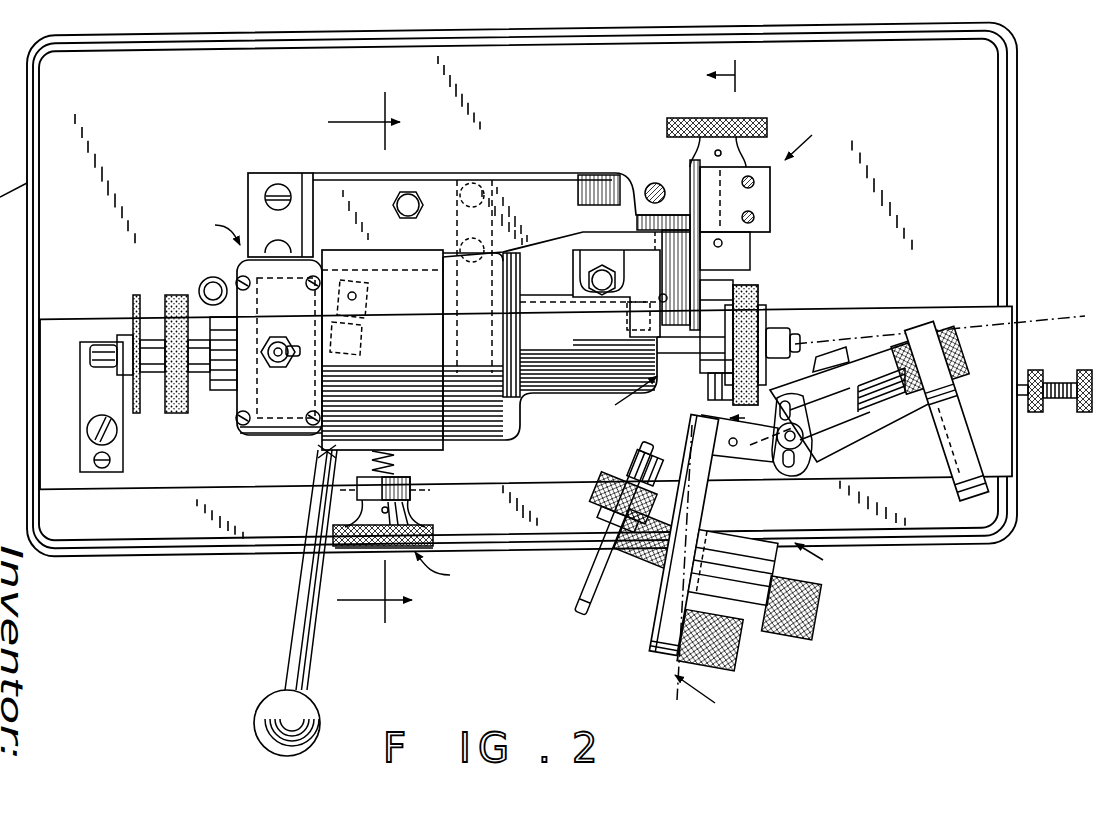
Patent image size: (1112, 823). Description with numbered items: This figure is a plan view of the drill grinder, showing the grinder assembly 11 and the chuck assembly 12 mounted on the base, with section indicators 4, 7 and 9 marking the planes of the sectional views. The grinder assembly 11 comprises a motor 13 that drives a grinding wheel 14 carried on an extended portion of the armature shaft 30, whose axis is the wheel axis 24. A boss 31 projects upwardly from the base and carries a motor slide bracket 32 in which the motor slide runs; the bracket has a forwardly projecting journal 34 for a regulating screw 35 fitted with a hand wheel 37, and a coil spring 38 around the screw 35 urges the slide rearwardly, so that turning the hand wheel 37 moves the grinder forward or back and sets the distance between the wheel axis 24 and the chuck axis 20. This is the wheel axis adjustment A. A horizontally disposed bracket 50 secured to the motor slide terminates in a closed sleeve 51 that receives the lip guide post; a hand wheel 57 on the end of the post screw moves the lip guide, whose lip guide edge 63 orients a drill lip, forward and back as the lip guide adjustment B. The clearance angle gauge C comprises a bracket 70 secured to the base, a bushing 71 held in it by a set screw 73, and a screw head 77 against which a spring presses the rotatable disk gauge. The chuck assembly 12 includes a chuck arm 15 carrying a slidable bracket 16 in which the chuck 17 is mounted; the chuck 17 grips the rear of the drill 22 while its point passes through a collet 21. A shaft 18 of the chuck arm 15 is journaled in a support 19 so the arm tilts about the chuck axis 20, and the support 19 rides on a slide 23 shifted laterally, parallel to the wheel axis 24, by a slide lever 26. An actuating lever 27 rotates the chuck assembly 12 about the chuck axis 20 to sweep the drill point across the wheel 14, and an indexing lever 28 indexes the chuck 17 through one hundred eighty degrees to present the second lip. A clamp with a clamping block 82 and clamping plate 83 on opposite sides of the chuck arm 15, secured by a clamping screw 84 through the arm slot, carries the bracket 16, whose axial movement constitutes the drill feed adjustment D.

The section line 4- 4 is at (370, 361).
The section line 7- 7 is at (731, 243).
The section line 9- 9 is at (759, 634).
The grinder assembly 11 is at (204, 228).
The chuck assembly 12 is at (703, 573).
The motor 13 is at (420, 357).
The grinding wheel 14 is at (758, 295).
The chuck arm 15 is at (661, 660).
The bracket 16 is at (693, 497).
The chuck 17 is at (592, 480).
The shaft 18 is at (856, 360).
The support 19 is at (870, 432).
The chuck axis 20 is at (1078, 302).
The collet 21 is at (700, 405).
The drill 22 is at (580, 606).
The slide 23 is at (176, 500).
The wheel axis 24 is at (830, 330).
The slide lever 26 is at (295, 632).
The actuating lever 27 is at (960, 455).
The indexing lever 28 is at (605, 565).
The armature shaft 30 is at (716, 310).
The boss 31 is at (250, 188).
The motor slide bracket 32 is at (316, 452).
The journal 34 is at (410, 497).
The regulating screw 35 is at (400, 474).
The hand wheel 37 is at (435, 548).
The coil spring 38 is at (400, 452).
The bracket 50 is at (560, 190).
The sleeve 51 is at (698, 185).
The hand wheel 57 is at (705, 118).
The lip guide edge 63 is at (712, 390).
The bracket 70 is at (618, 230).
The bushing 71 is at (640, 314).
The set screw 73 is at (659, 301).
The screw head 77 is at (650, 248).
The clamping block 82 is at (787, 567).
The clamping plate 83 is at (700, 580).
The clamping screw 84 is at (810, 613).
The wheel axis adjustment A is at (438, 572).
The lip guide adjustment B is at (807, 136).
The clearance angle gauge C is at (626, 397).
The drill feed adjustment D is at (743, 653).